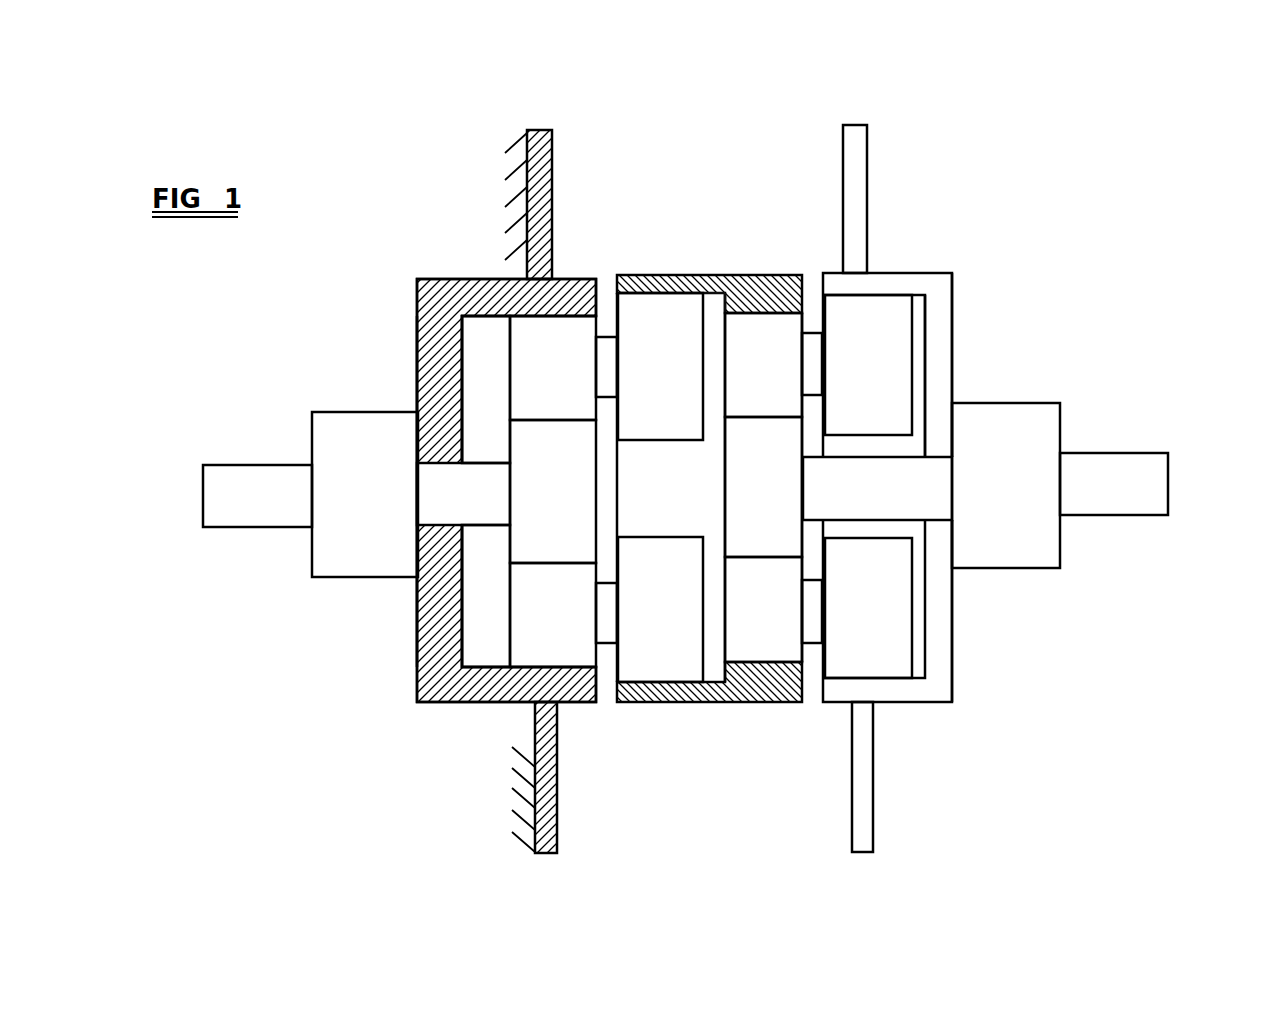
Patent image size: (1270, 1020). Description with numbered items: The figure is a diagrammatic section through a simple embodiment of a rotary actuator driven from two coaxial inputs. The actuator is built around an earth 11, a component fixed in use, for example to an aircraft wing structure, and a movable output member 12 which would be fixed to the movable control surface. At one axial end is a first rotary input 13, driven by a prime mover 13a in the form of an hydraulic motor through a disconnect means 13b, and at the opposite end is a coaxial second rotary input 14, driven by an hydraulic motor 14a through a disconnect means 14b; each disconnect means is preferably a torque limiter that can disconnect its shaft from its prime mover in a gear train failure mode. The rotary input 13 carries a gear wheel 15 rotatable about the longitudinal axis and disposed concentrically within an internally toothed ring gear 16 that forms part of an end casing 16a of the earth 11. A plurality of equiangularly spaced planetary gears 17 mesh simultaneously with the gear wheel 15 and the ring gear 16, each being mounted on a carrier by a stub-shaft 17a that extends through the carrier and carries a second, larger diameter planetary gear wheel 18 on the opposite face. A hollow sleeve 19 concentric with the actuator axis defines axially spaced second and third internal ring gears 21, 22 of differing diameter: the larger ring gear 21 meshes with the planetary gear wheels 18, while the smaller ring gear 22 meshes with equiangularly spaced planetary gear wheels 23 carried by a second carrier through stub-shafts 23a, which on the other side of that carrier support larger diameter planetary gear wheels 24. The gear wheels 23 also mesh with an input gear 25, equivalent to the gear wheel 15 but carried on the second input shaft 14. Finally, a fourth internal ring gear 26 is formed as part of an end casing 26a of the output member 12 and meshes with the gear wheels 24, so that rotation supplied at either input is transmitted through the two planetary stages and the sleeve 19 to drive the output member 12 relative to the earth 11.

The earth 11 is at (552, 130).
The output member 12 is at (858, 160).
The first rotary input 13 is at (447, 487).
The prime mover 13a is at (222, 497).
The disconnect means 13b is at (333, 545).
The second rotary input 14 is at (900, 478).
The hydraulic motor 14a is at (1140, 488).
The disconnect means 14b is at (1032, 533).
The gear wheel 15 is at (550, 543).
The internally toothed ring gear 16 is at (520, 298).
The end casing 16a is at (440, 348).
The planetary gears 17 is at (530, 388).
The stub-shaft 17a is at (597, 275).
The second planetary gear wheel 18 is at (683, 277).
The hollow sleeve 19 is at (730, 275).
The second internal ring gear 21 is at (645, 277).
The third internal ring gear 22 is at (765, 277).
The planetary gear wheels 23 is at (805, 278).
The stub-shafts 23a is at (815, 375).
The larger diameter planetary gear wheels 24 is at (872, 317).
The input gear 25 is at (772, 485).
The fourth internal ring gear 26 is at (887, 280).
The end casing 26a is at (945, 312).